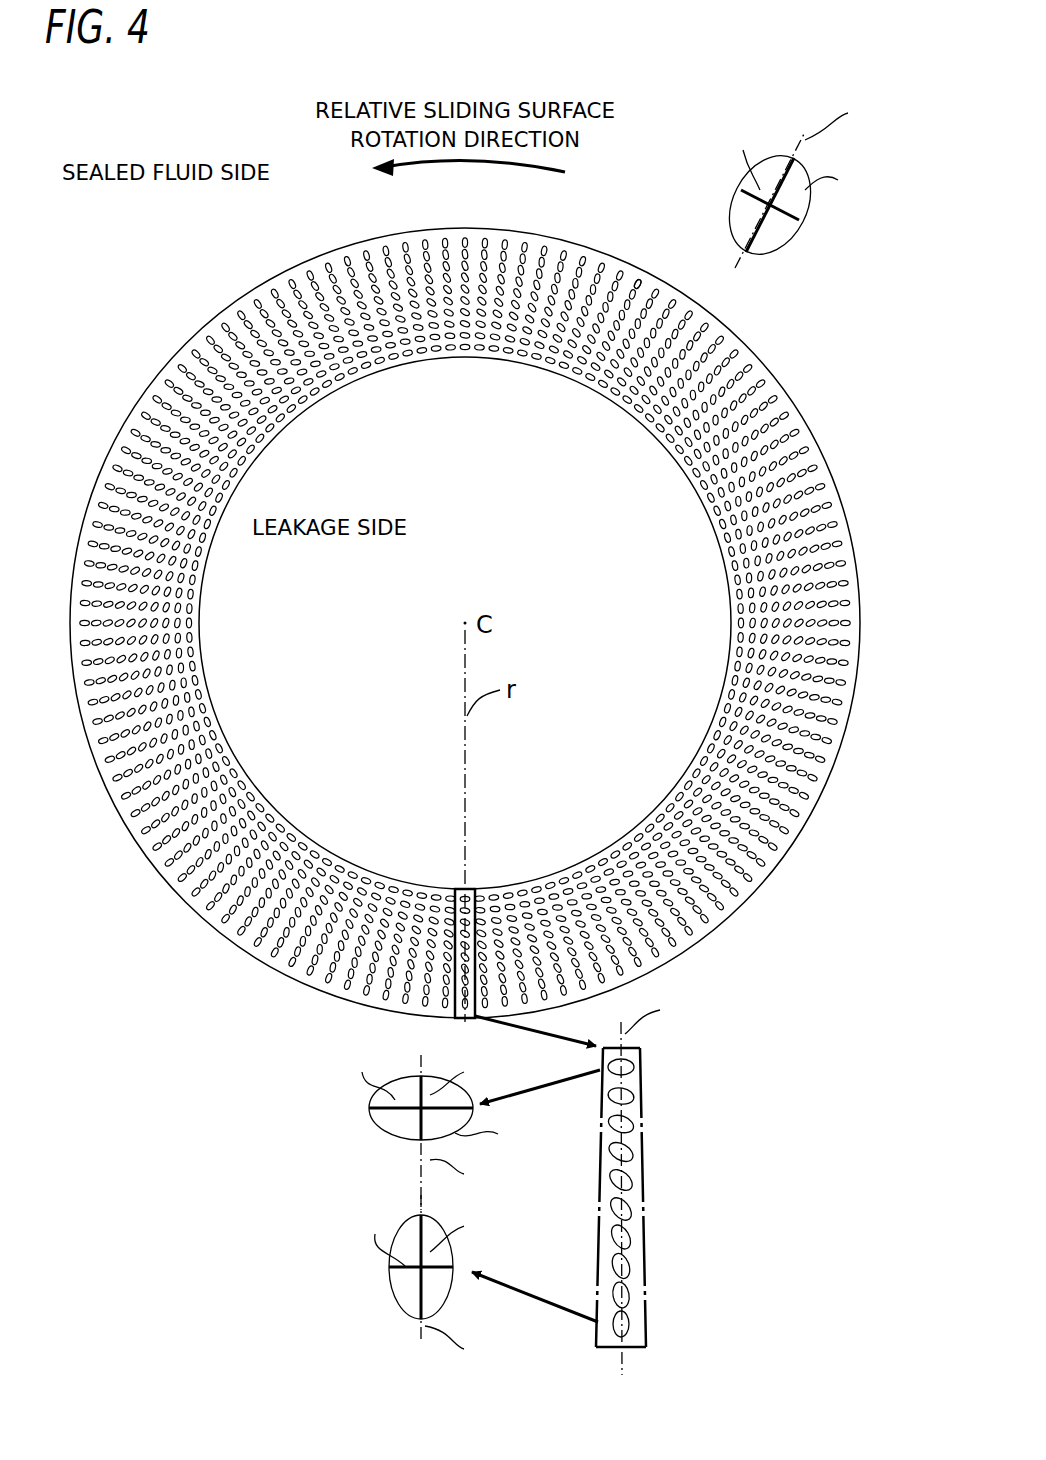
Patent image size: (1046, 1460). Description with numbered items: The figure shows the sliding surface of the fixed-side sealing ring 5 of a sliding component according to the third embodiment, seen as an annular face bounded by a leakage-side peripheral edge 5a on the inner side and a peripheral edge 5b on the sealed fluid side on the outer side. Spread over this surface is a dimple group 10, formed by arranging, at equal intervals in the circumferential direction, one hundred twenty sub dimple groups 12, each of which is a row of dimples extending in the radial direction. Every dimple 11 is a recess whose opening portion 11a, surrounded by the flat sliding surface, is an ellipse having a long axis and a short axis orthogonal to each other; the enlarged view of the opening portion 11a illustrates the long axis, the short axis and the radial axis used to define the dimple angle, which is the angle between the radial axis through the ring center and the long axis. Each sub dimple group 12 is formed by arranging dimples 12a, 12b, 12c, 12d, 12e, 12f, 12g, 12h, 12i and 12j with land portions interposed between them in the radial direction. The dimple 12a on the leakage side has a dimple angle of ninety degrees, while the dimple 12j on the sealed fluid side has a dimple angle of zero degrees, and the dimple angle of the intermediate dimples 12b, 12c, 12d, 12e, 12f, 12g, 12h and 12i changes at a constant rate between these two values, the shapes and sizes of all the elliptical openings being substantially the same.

The fixed-side sealing ring 5 is at (477, 611).
The leakage-side peripheral edge 5a is at (690, 483).
The peripheral edge on the sealed fluid side 5b is at (806, 420).
The dimple group 10 is at (268, 290).
The dimple 11 is at (736, 225).
The opening portion 11a is at (775, 246).
The sub dimple group 12 is at (473, 884).
The dimple 12a is at (634, 1062).
The dimple 12b is at (634, 1094).
The dimple 12c is at (634, 1124).
The dimple 12d is at (634, 1153).
The dimple 12e is at (634, 1181).
The dimple 12f is at (634, 1209).
The dimple 12g is at (634, 1237).
The dimple 12h is at (634, 1266).
The dimple 12i is at (634, 1295).
The dimple 12j is at (520, 1287).